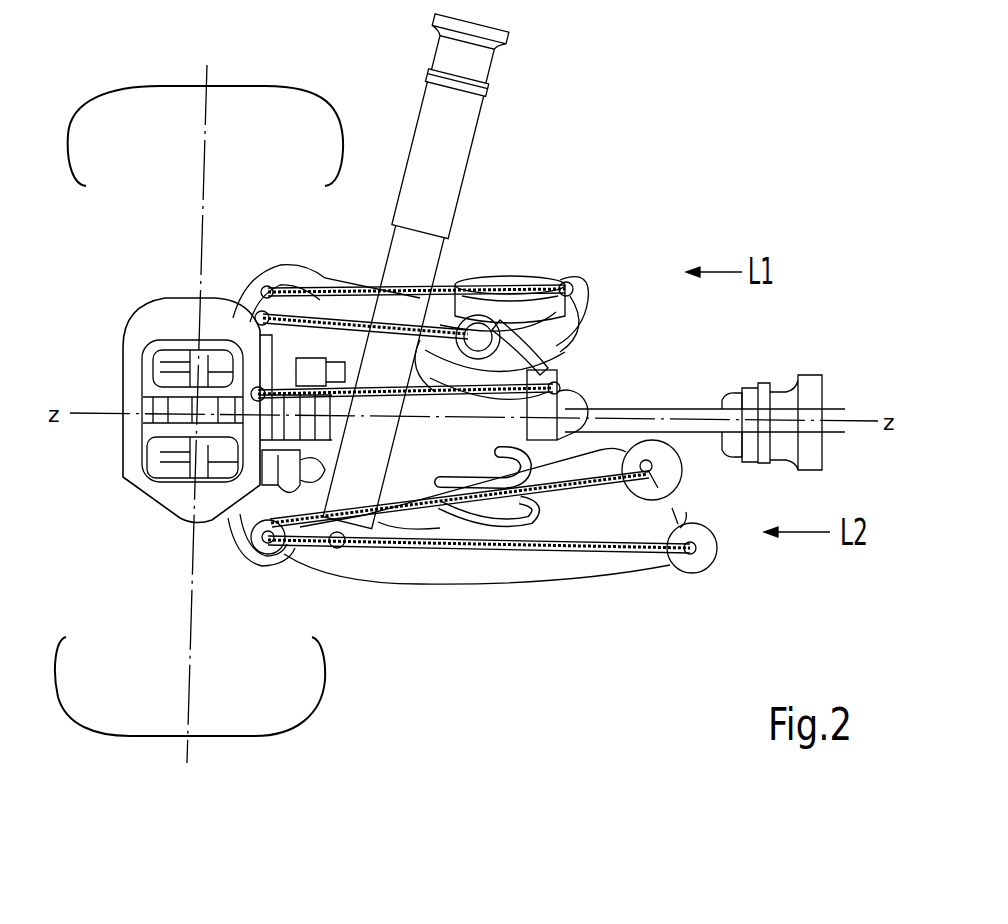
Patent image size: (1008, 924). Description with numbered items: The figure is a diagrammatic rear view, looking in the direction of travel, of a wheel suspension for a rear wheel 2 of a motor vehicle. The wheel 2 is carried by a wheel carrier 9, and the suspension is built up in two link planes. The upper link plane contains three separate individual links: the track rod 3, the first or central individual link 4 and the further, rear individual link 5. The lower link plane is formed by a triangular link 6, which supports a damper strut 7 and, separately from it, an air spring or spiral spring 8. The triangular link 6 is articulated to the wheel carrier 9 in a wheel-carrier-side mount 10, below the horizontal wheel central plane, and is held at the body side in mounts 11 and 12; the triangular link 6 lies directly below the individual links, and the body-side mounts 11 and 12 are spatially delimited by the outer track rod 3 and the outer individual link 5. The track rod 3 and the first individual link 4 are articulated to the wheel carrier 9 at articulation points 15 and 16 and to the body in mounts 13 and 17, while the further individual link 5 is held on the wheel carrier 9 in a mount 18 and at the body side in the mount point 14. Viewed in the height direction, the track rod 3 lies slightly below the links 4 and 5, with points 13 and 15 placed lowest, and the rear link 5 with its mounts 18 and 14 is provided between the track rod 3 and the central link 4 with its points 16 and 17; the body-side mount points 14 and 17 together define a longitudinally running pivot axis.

The rear wheel 2 is at (121, 712).
The track rod 3 is at (552, 360).
The first individual link 4 is at (432, 278).
The further individual link 5 is at (326, 318).
The triangular link 6 is at (472, 568).
The damper strut 7 is at (480, 133).
The air spring or spiral spring 8 is at (568, 336).
The wheel carrier 9 is at (232, 518).
The wheel-carrier-side mount 10 is at (270, 548).
The body-side mount 11 is at (678, 464).
The body-side mount 12 is at (692, 574).
The body-side mount 13 is at (573, 387).
The body-side mount point 14 is at (496, 284).
The articulation point 15 is at (254, 393).
The articulation point 16 is at (270, 288).
The body-side mount 17 is at (574, 288).
The mount 18 is at (258, 312).